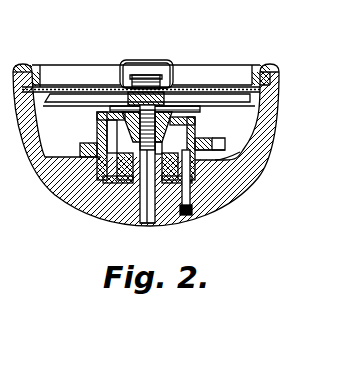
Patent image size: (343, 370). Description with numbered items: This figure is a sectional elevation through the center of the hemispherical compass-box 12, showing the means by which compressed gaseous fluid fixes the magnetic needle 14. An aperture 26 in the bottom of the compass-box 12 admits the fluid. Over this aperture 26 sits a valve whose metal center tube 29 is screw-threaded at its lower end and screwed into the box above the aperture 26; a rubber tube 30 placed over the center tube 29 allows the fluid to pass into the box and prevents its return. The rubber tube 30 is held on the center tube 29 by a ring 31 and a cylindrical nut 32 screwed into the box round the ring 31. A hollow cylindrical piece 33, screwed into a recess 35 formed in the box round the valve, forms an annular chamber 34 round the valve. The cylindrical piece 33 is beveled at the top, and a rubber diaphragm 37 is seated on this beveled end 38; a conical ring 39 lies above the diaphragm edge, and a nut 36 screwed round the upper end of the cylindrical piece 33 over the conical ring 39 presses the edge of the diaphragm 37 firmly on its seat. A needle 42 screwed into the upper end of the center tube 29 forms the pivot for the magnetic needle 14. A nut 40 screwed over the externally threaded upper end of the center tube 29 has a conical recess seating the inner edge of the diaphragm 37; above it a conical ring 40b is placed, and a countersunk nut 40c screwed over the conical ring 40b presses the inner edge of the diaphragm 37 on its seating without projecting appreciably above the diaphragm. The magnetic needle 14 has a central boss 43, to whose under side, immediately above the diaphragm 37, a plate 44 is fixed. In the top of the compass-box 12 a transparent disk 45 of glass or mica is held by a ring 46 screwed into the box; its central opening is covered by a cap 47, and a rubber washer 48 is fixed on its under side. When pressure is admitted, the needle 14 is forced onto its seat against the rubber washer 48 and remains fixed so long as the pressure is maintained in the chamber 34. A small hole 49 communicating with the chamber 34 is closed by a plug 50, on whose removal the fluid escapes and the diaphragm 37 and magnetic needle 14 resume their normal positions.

The compass-box 12 is at (60, 174).
The magnetic needle 14 is at (53, 100).
The aperture 26 is at (148, 218).
The center tube 29 is at (140, 210).
The rubber tube 30 is at (161, 150).
The ring 31 is at (128, 195).
The cylindrical nut 32 is at (103, 205).
The hollow cylindrical piece 33 is at (82, 150).
The annular chamber 34 is at (107, 135).
The recess 35 is at (222, 159).
The nut 36 is at (226, 140).
The rubber diaphragm 37 is at (202, 109).
The beveled end 38 is at (200, 128).
The conical ring 39 is at (97, 114).
The nut 40 is at (134, 130).
The conical ring 40b is at (168, 127).
The nut 40c is at (188, 98).
The needle 42 is at (98, 130).
The central boss 43 is at (146, 62).
The plate 44 is at (112, 100).
The transparent disk 45 is at (70, 85).
The ring 46 is at (22, 66).
The cap 47 is at (177, 63).
The rubber washer 48 is at (50, 86).
The small hole 49 is at (212, 196).
The plug 50 is at (190, 212).